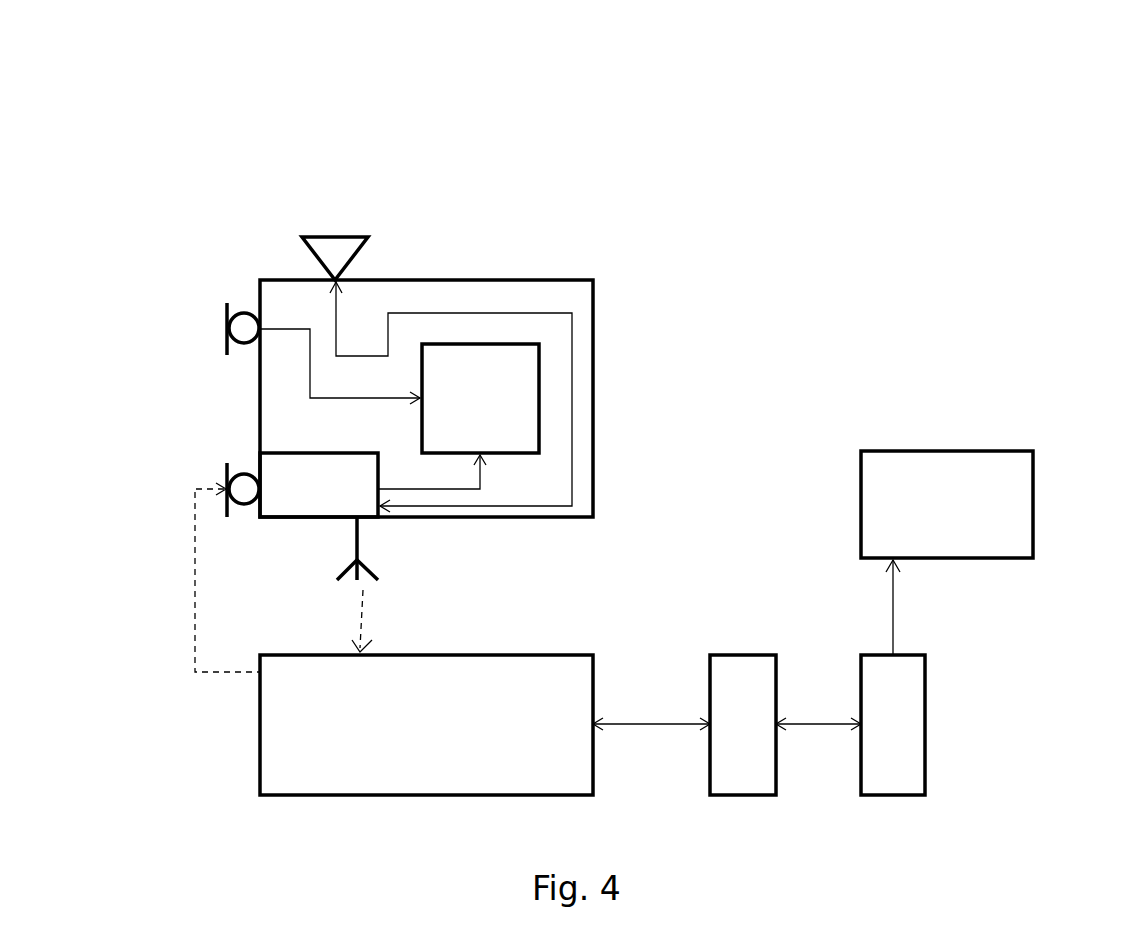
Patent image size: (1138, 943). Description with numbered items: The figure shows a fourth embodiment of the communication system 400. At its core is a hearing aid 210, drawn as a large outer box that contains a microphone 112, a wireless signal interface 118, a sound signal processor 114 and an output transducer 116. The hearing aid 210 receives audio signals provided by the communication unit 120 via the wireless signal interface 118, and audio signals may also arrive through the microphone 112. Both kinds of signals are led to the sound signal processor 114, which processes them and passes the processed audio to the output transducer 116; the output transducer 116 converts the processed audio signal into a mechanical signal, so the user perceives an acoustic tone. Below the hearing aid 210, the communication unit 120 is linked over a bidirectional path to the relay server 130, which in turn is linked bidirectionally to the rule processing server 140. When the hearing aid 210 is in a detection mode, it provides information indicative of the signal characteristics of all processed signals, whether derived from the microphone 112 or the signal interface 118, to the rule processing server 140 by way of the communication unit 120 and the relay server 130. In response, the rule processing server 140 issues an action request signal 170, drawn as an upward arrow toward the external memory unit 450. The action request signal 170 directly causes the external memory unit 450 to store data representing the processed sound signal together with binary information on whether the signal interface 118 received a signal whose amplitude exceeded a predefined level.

The communication system 400 is at (168, 160).
The hearing aid 210 is at (508, 296).
The output transducer 116 is at (345, 256).
The microphone 112 is at (245, 325).
The sound signal processor 114 is at (522, 387).
The wireless signal interface 118 is at (290, 472).
The communication unit 120 is at (278, 728).
The relay server 130 is at (738, 672).
The rule processing server 140 is at (908, 727).
The action request signal 170 is at (893, 603).
The external memory unit 450 is at (1013, 501).